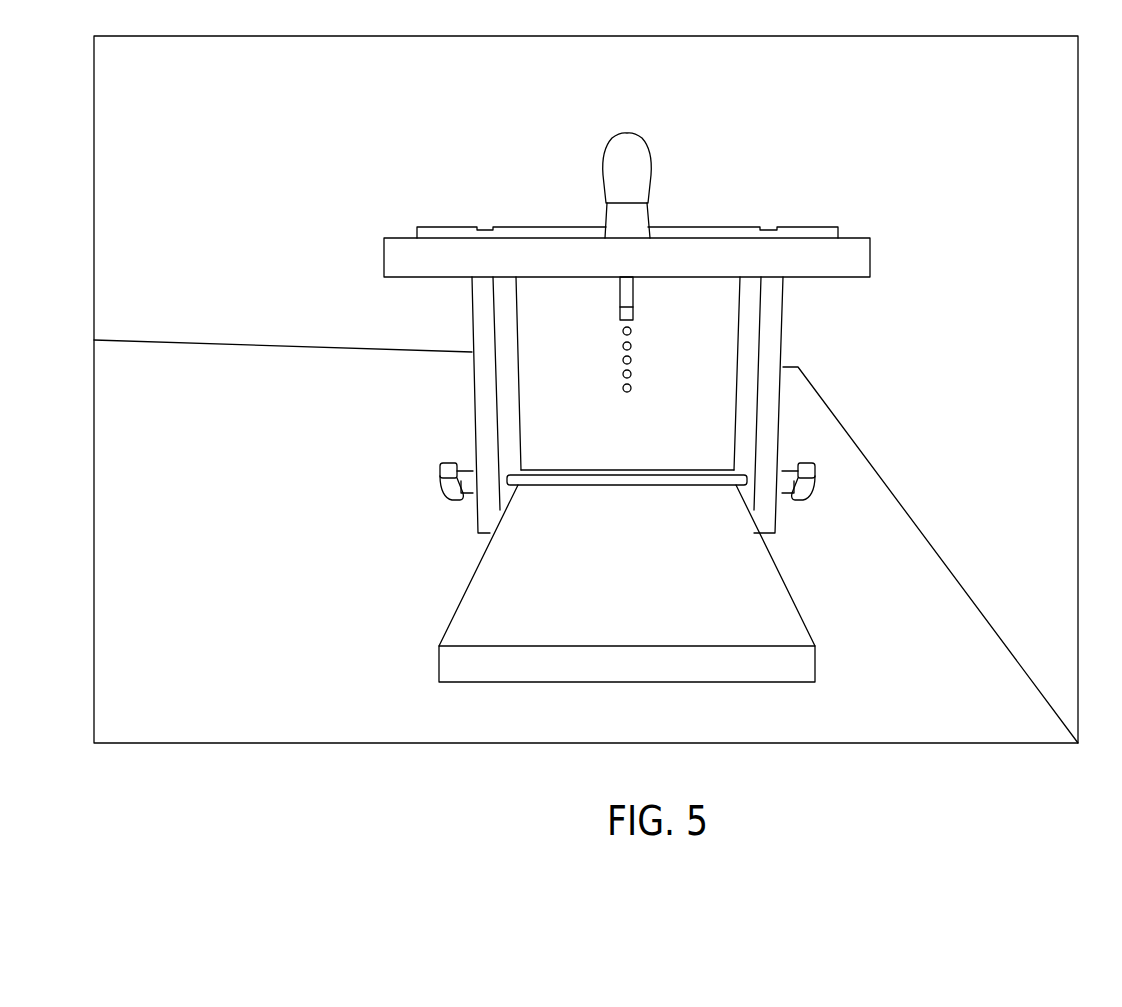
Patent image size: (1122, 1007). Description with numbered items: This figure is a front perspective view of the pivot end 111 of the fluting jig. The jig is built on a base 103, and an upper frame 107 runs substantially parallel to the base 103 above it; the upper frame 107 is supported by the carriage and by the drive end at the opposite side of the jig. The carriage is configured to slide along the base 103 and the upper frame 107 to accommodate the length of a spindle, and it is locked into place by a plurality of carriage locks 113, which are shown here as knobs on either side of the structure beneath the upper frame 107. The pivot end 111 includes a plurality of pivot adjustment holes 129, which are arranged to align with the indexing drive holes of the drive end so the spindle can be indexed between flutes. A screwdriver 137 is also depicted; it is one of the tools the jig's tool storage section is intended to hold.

The base 103 is at (490, 603).
The upper frame 107 is at (870, 257).
The pivot end 111 is at (358, 197).
The carriage locks 113 is at (812, 485).
The pivot adjustment holes 129 is at (631, 331).
The screwdriver 137 is at (653, 172).